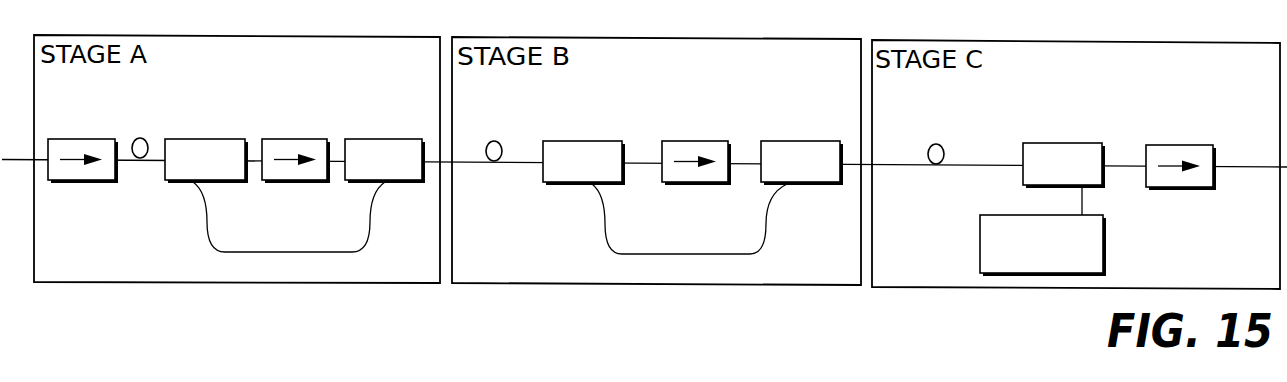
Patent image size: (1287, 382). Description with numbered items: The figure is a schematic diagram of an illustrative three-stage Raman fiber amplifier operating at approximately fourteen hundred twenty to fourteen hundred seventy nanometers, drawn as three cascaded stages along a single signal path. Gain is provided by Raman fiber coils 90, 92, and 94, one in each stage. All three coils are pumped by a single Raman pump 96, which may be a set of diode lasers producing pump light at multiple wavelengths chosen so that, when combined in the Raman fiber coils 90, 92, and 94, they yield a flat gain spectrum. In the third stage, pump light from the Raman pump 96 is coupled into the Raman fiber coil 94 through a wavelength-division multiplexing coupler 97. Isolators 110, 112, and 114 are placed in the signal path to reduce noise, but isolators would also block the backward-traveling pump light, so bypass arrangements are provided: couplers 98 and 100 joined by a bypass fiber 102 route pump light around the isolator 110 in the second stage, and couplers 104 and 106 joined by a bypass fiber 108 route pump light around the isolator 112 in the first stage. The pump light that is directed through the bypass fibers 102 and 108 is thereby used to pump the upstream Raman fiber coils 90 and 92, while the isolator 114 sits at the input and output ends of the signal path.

The Raman fiber coil 90 is at (154, 116).
The Raman fiber coil 92 is at (514, 119).
The Raman fiber coil 94 is at (956, 121).
The Raman pump 96 is at (980, 236).
The wavelength-division multiplexing coupler 97 is at (1055, 143).
The coupler 98 is at (792, 141).
The coupler 100 is at (575, 141).
The bypass fiber 102 is at (605, 228).
The coupler 104 is at (372, 139).
The coupler 106 is at (195, 139).
The bypass fiber 108 is at (207, 227).
The isolator 110 is at (690, 141).
The isolator 112 is at (290, 139).
The isolator 114 is at (75, 139).